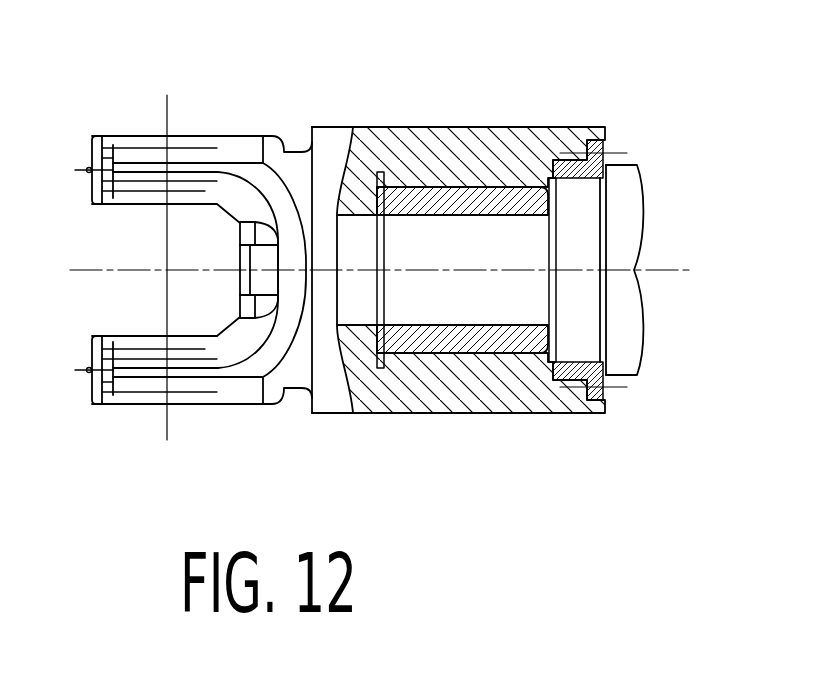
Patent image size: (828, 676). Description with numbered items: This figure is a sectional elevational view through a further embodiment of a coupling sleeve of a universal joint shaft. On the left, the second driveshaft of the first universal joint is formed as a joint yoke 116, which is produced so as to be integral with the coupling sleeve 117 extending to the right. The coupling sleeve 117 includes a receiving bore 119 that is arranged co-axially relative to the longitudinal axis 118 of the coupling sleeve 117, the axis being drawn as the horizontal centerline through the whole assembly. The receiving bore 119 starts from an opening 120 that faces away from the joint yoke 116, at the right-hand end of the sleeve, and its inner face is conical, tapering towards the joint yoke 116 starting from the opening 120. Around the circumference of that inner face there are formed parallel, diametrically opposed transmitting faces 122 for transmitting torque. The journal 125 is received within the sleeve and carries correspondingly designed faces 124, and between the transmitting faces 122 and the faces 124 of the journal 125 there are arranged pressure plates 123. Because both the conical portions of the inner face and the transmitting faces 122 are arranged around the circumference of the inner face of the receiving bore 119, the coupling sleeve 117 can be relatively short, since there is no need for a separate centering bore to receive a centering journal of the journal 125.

The joint yoke 116 is at (229, 152).
The coupling sleeve 117 is at (398, 145).
The longitudinal axis 118 is at (670, 273).
The receiving bore 119 is at (543, 190).
The opening 120 is at (612, 245).
The transmitting faces 122 is at (502, 202).
The pressure plates 123 is at (521, 200).
The faces of the journal 124 is at (425, 215).
The journal 125 is at (480, 255).